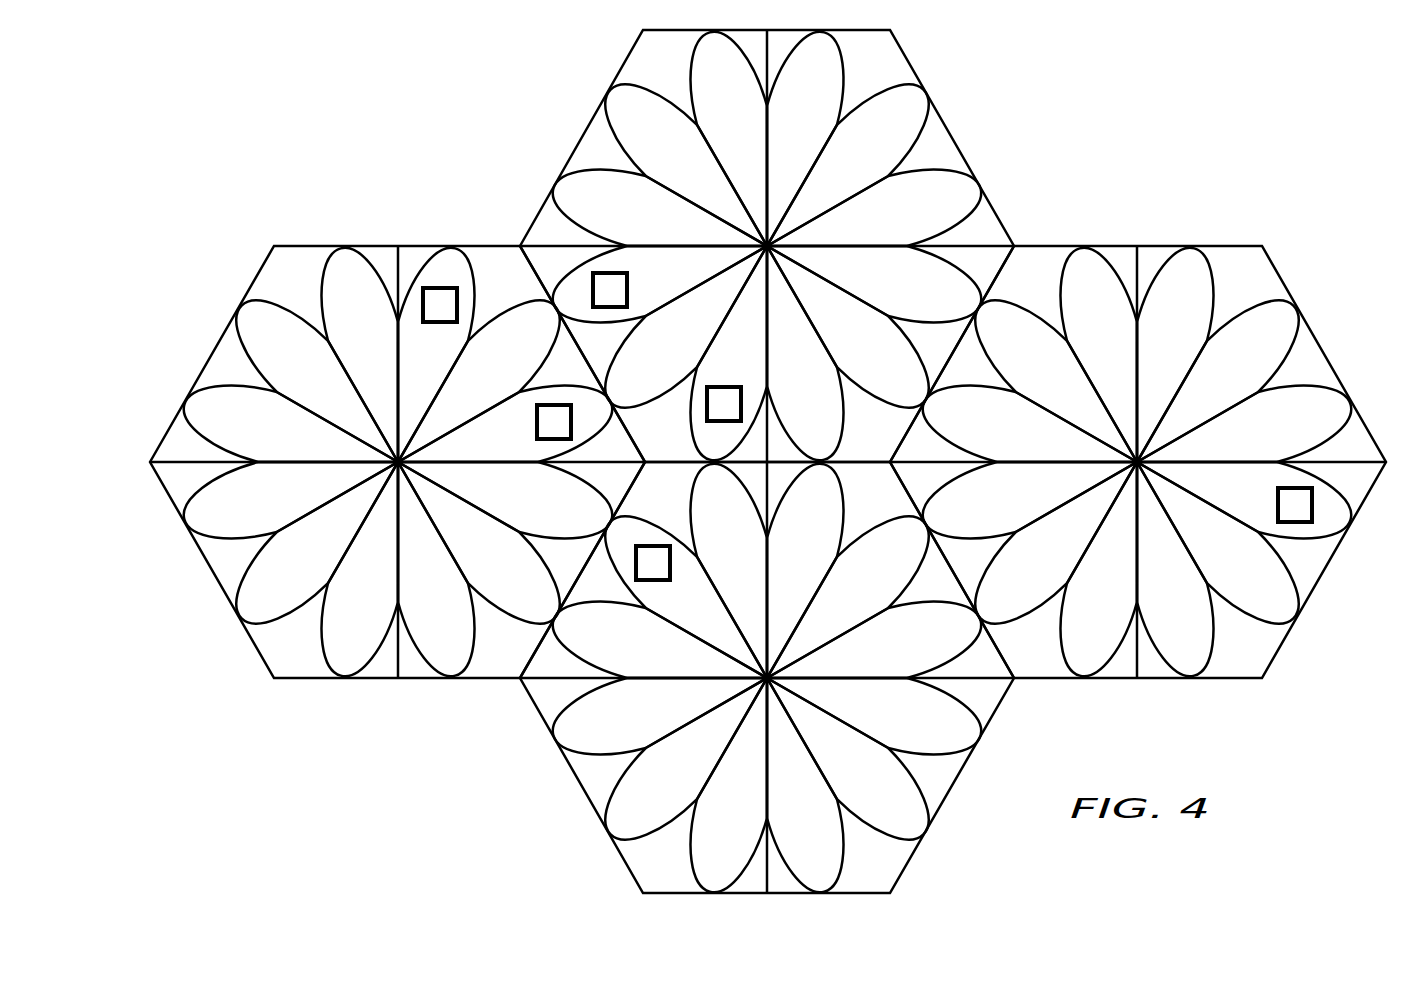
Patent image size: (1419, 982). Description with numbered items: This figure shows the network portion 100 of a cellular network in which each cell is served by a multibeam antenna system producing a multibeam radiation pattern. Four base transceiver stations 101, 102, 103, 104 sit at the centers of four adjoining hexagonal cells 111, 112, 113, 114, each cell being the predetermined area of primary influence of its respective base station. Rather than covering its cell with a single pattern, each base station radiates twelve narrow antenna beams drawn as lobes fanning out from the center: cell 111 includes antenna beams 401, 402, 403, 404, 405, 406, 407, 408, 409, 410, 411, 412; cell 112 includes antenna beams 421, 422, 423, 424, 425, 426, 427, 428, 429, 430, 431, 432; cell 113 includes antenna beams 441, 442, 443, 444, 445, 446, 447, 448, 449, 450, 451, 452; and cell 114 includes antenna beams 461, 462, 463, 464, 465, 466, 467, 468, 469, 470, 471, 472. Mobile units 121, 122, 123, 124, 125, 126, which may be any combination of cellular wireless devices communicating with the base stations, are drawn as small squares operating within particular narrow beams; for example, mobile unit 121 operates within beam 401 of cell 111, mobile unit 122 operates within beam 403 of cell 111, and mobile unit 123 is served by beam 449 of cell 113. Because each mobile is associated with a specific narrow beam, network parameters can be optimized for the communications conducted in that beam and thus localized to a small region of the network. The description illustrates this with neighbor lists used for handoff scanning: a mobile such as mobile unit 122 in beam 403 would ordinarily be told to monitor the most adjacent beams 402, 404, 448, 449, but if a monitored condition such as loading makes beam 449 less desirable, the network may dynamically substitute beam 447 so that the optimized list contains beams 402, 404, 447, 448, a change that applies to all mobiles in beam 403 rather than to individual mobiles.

The network portion 100 is at (776, 462).
The base transceiver station 101 is at (398, 462).
The base transceiver station 102 is at (767, 678).
The base transceiver station 103 is at (767, 246).
The base transceiver station 104 is at (1137, 462).
The cell 111 is at (400, 679).
The cell 112 is at (950, 783).
The cell 113 is at (950, 137).
The cell 114 is at (1135, 246).
The mobile unit 121 is at (438, 288).
The mobile unit 122 is at (571, 420).
The mobile unit 123 is at (593, 289).
The mobile unit 124 is at (710, 418).
The mobile unit 125 is at (648, 547).
The mobile unit 126 is at (1312, 503).
The antenna beam 401 is at (444, 368).
The antenna beam 402 is at (531, 368).
The antenna beam 403 is at (510, 452).
The antenna beam 404 is at (573, 516).
The antenna beam 405 is at (533, 592).
The antenna beam 406 is at (461, 634).
The antenna beam 407 is at (377, 634).
The antenna beam 408 is at (305, 592).
The antenna beam 409 is at (263, 516).
The antenna beam 410 is at (263, 438).
The antenna beam 411 is at (304, 364).
The antenna beam 412 is at (377, 320).
The antenna beam 421 is at (830, 537).
The antenna beam 422 is at (900, 577).
The antenna beam 423 is at (941, 648).
The antenna beam 424 is at (941, 733).
The antenna beam 425 is at (901, 807).
The antenna beam 426 is at (830, 845).
The antenna beam 427 is at (746, 845).
The antenna beam 428 is at (673, 807).
The antenna beam 429 is at (633, 733).
The antenna beam 430 is at (633, 648).
The antenna beam 431 is at (706, 613).
The antenna beam 432 is at (746, 537).
The antenna beam 441 is at (828, 100).
The antenna beam 442 is at (900, 142).
The antenna beam 443 is at (941, 215).
The antenna beam 444 is at (941, 301).
The antenna beam 445 is at (900, 370).
The antenna beam 446 is at (828, 417).
The antenna beam 447 is at (756, 366).
The antenna beam 448 is at (670, 374).
The antenna beam 449 is at (680, 284).
The antenna beam 450 is at (631, 215).
The antenna beam 451 is at (670, 142).
The antenna beam 452 is at (743, 100).
The antenna beam 461 is at (1198, 317).
The antenna beam 462 is at (1271, 358).
The antenna beam 463 is at (1315, 435).
The antenna beam 464 is at (1256, 502).
The antenna beam 465 is at (1273, 590).
The antenna beam 466 is at (1198, 632).
The antenna beam 467 is at (1116, 632).
The antenna beam 468 is at (1046, 590).
The antenna beam 469 is at (1000, 520).
The antenna beam 470 is at (1003, 435).
The antenna beam 471 is at (1043, 360).
The antenna beam 472 is at (1115, 317).